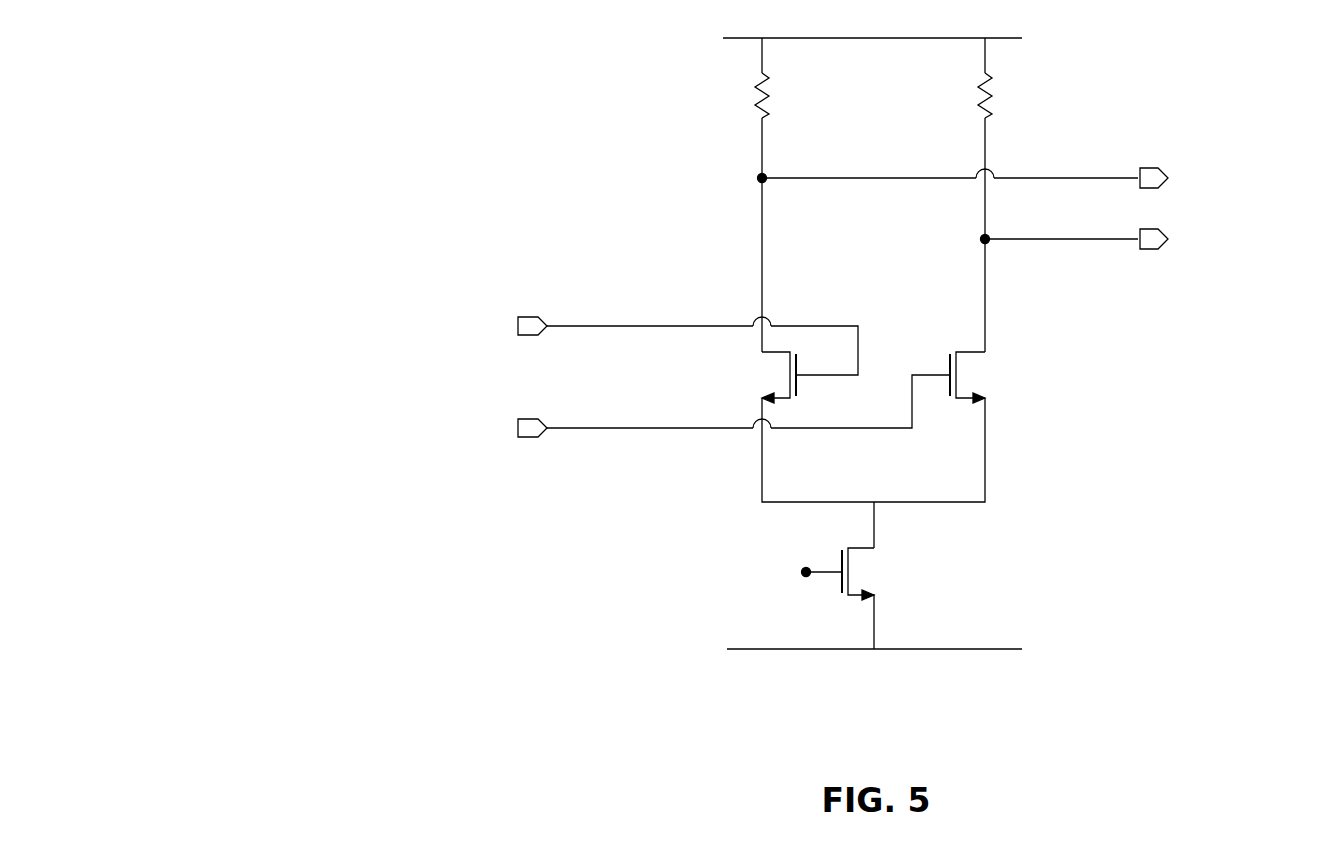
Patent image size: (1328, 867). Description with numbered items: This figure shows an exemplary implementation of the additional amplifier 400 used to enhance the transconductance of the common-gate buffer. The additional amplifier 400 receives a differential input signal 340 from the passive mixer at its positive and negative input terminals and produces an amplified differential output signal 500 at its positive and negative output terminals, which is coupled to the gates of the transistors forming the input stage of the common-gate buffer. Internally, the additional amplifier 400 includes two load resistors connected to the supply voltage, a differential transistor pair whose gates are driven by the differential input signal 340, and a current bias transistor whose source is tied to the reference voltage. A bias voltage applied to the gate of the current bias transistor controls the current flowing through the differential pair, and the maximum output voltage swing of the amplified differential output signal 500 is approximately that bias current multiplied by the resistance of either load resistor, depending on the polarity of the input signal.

The differential input signal 340 is at (500, 437).
The additional amplifier 400 is at (452, 705).
The amplified differential output signal 500 is at (1185, 168).